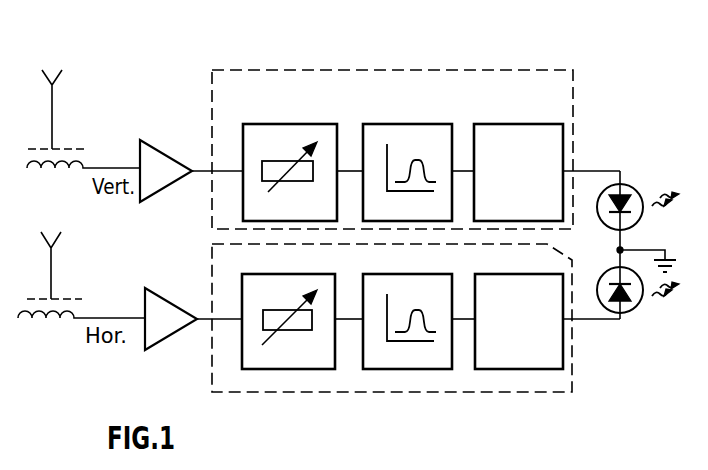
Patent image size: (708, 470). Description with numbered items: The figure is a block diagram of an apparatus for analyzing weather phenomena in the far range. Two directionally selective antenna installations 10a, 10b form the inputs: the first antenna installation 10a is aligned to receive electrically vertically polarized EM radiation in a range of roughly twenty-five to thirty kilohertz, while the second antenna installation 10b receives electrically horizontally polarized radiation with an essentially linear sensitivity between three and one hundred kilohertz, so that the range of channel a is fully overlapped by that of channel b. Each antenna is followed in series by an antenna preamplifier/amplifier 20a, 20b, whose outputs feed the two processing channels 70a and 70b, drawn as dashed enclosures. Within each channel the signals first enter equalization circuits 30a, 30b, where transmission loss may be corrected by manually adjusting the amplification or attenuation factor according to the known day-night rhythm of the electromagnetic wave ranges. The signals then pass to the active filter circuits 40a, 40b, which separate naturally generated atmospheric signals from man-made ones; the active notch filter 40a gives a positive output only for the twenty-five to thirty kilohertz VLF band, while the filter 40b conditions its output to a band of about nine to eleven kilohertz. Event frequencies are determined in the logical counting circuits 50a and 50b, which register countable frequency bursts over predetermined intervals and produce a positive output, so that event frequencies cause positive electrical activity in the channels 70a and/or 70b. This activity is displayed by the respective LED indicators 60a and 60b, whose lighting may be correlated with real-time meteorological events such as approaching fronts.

The first antenna installation 10a is at (100, 133).
The second antenna installation 10b is at (103, 290).
The antenna preamplifier/amplifier 20a is at (152, 153).
The antenna preamplifier/amplifier 20b is at (157, 307).
The equalization circuit 30a is at (263, 132).
The equalization circuit 30b is at (253, 285).
The active filter circuit 40a is at (372, 130).
The active filter circuit 40b is at (373, 283).
The logical counting circuit 50a is at (485, 131).
The logical counting circuit 50b is at (487, 281).
The LED indicator 60a is at (632, 185).
The LED indicator 60b is at (626, 306).
The processing channel 70a is at (563, 80).
The processing channel 70b is at (561, 386).